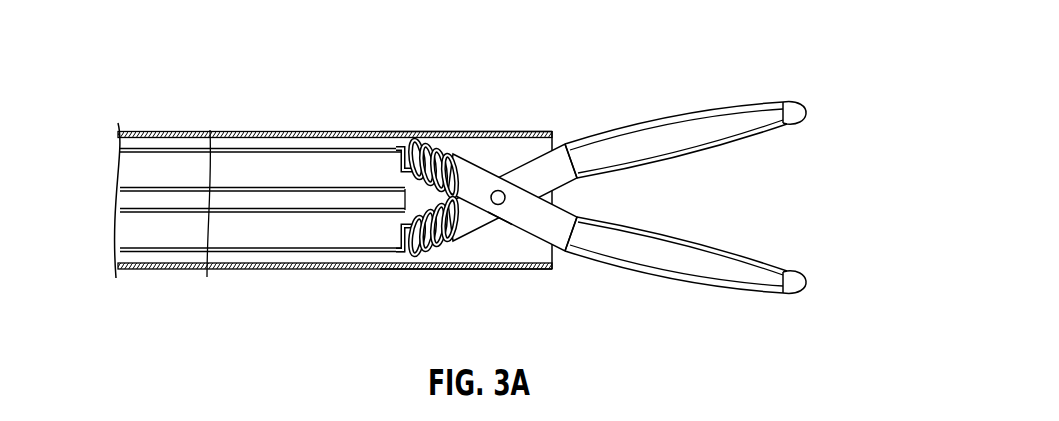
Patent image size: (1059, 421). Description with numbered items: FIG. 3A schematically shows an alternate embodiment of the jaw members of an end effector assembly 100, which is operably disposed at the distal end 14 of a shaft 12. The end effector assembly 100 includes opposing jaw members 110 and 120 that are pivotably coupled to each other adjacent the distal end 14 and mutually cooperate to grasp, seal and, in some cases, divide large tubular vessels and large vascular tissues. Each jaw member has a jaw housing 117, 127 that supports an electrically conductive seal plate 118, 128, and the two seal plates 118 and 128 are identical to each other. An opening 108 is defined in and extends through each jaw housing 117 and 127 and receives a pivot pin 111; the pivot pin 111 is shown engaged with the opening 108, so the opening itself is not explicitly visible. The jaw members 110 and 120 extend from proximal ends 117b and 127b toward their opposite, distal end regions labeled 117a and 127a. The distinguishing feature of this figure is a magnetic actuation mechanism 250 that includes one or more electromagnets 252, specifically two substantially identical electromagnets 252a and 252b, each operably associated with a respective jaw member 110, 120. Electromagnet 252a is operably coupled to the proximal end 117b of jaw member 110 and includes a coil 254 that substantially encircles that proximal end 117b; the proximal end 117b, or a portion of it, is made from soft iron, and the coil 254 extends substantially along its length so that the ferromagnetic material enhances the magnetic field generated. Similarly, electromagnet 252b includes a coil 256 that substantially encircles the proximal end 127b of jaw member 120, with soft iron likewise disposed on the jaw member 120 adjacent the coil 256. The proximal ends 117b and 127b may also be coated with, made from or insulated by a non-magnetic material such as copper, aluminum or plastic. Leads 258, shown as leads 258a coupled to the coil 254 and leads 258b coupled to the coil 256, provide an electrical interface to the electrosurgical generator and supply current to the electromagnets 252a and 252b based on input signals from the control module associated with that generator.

The end effector assembly 100 is at (708, 43).
The shaft 12 is at (292, 132).
The distal end 14 is at (498, 182).
The opening 108 is at (503, 190).
The jaw member 110 is at (812, 282).
The pivot pin 111 is at (498, 213).
The jaw housing 117 is at (635, 270).
The distal tip of first jaw member 117a is at (793, 293).
The proximal end 117b is at (470, 160).
The seal plate 118 is at (695, 242).
The jaw member 120 is at (812, 110).
The jaw housing 127 is at (635, 122).
The distal tip of second jaw member 127a is at (775, 103).
The proximal end 127b is at (470, 235).
The seal plate 128 is at (695, 153).
The magnetic actuation mechanism 250 is at (422, 80).
The electromagnets 252 is at (393, 223).
The electromagnet 252a is at (417, 130).
The electromagnet 252b is at (417, 270).
The coil 254 is at (438, 138).
The coil 256 is at (437, 255).
The drive tube 258 is at (135, 175).
The leads 258a is at (225, 147).
The leads 258b is at (225, 257).